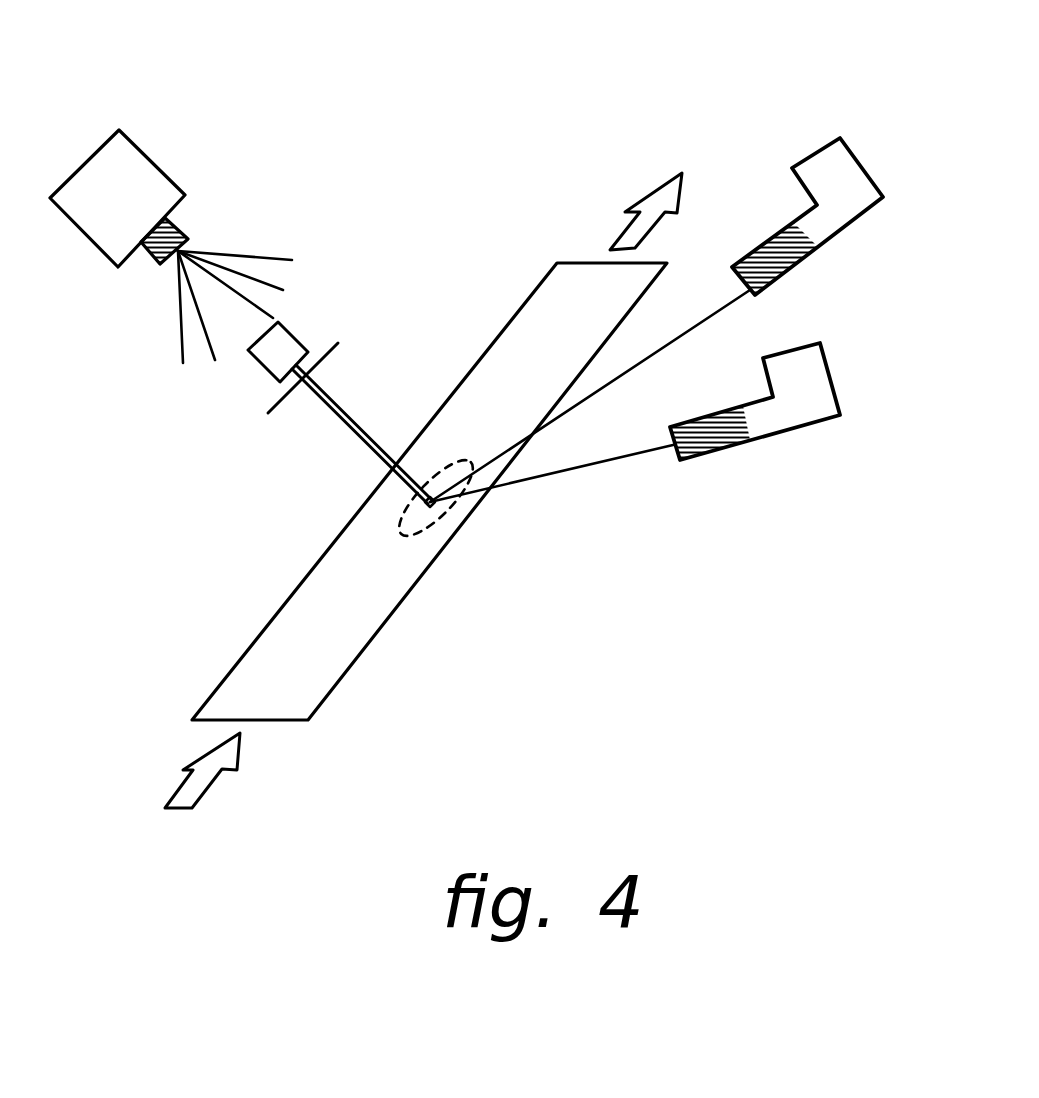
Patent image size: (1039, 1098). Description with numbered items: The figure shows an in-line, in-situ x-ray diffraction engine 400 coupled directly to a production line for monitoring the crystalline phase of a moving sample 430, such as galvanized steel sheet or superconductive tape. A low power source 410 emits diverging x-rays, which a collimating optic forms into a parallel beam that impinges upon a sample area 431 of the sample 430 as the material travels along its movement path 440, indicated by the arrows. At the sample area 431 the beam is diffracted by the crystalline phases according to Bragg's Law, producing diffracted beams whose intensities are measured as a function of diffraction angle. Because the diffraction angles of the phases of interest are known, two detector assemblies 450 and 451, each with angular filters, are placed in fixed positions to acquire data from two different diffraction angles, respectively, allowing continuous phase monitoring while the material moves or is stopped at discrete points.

The x-ray diffraction engine 400 is at (405, 108).
The low power source 410 is at (157, 163).
The moving sample 430 is at (390, 620).
The sample area 431 is at (438, 515).
The movement path 440 is at (617, 237).
The detector assembly 450 is at (860, 165).
The detector assembly 451 is at (837, 392).